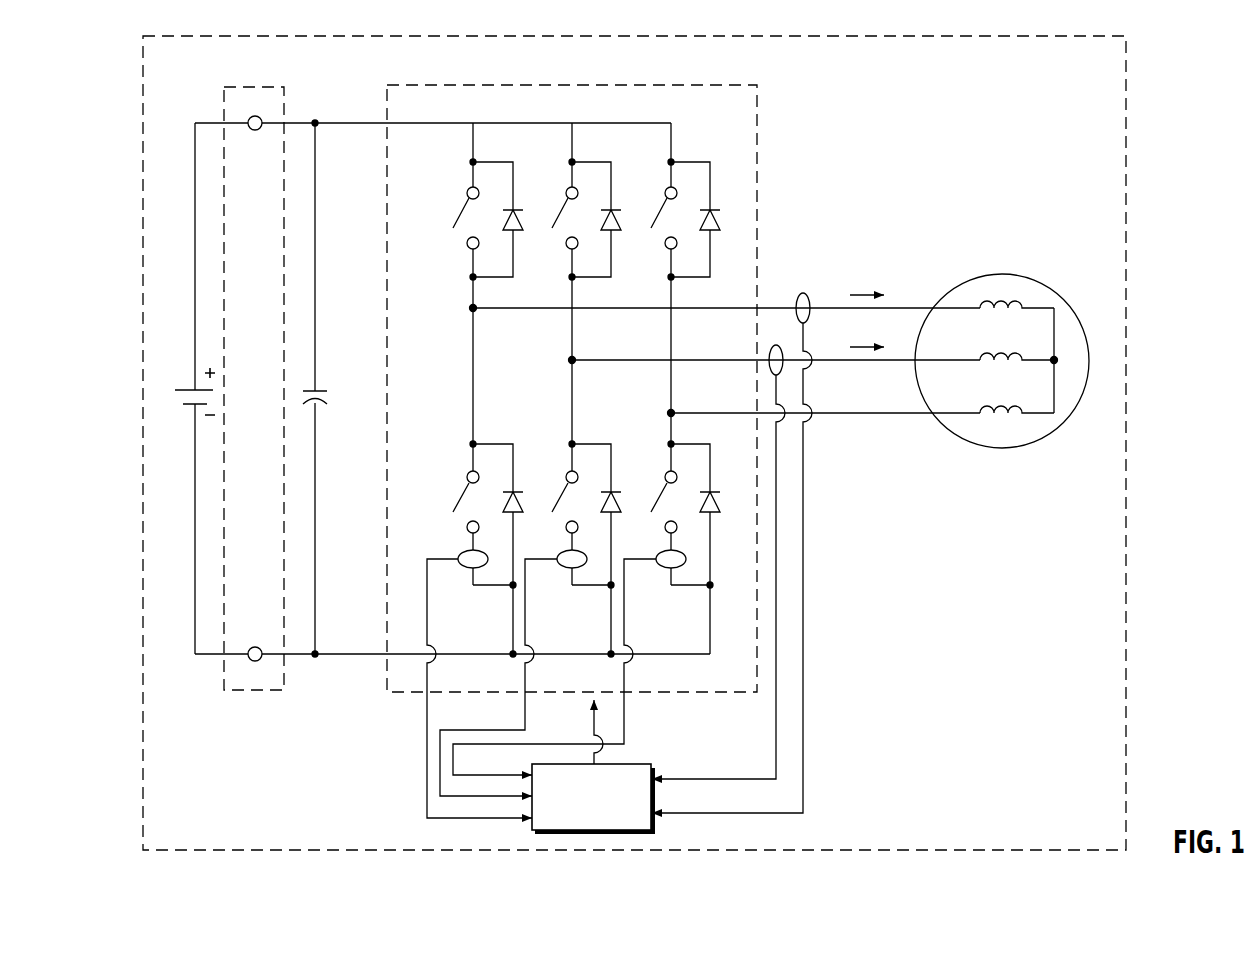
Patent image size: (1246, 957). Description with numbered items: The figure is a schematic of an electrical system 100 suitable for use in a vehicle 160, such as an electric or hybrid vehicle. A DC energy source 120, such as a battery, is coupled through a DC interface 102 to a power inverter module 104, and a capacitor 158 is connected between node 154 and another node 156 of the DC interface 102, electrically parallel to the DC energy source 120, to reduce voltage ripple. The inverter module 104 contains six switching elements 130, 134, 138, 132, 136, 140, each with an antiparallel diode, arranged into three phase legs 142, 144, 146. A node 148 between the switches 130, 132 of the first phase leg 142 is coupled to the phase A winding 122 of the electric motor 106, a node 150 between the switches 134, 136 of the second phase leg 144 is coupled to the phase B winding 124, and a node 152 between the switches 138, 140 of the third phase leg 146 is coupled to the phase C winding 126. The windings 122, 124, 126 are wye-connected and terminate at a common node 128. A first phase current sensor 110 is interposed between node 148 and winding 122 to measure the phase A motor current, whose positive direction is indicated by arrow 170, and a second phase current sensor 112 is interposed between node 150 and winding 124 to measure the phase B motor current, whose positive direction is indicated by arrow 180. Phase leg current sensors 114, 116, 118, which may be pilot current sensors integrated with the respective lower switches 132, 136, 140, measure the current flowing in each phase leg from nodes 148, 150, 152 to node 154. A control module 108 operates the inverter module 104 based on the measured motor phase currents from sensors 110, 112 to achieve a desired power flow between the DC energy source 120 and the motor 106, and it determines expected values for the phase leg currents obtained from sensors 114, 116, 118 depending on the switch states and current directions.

The electrical system 100 is at (981, 225).
The DC interface 102 is at (285, 98).
The power inverter module 104 is at (757, 147).
The electric motor 106 is at (1000, 275).
The control module 108 is at (628, 762).
The phase current sensor 110 is at (803, 293).
The phase current sensor 112 is at (776, 345).
The phase leg current sensor 114 is at (467, 570).
The phase leg current sensor 116 is at (566, 570).
The phase leg current sensor 118 is at (665, 570).
The DC energy source 120 is at (190, 405).
The first winding 122 is at (995, 297).
The second winding 124 is at (995, 350).
The third winding 126 is at (995, 403).
The common node 128 is at (1056, 361).
The switching element 130 is at (455, 207).
The switching element 132 is at (455, 490).
The switching element 134 is at (554, 207).
The switching element 136 is at (554, 490).
The switching element 138 is at (653, 207).
The switching element 140 is at (653, 490).
The first phase leg 142 is at (466, 667).
The second phase leg 144 is at (576, 668).
The third phase leg 146 is at (676, 667).
The node 148 is at (470, 309).
The node 150 is at (570, 361).
The node 152 is at (668, 412).
The node 154 is at (253, 647).
The node 156 is at (255, 130).
The capacitor 158 is at (322, 388).
The vehicle 160 is at (1127, 120).
The arrow 170 is at (873, 293).
The arrow 180 is at (875, 349).